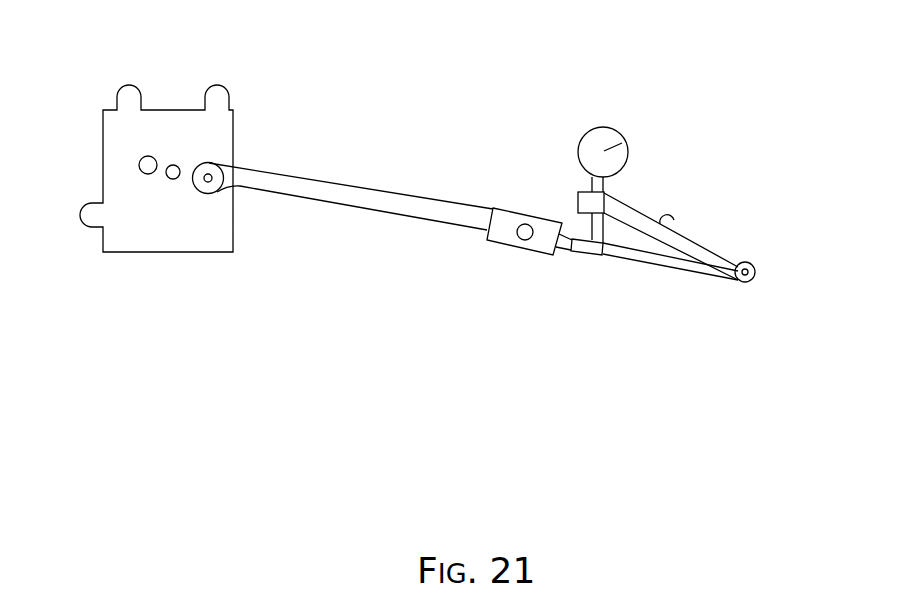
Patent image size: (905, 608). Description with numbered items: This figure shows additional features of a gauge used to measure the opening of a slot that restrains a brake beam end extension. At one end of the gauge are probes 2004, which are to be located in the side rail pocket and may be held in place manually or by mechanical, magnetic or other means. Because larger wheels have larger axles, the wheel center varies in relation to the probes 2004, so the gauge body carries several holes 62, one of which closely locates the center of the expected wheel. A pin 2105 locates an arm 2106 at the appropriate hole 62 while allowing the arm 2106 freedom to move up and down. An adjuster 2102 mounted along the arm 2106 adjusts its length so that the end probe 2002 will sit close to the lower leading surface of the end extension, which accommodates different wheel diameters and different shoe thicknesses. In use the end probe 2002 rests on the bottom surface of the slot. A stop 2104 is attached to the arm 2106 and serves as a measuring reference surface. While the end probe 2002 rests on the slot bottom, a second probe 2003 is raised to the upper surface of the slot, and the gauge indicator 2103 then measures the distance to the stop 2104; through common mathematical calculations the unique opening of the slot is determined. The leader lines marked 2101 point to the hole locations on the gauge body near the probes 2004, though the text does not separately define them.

The probes 2004 is at (130, 84).
The aperture 2101 is at (155, 158).
The holes 62 is at (208, 182).
The pin 2105 is at (213, 182).
The arm 2106 is at (377, 213).
The adjuster 2102 is at (525, 224).
The gauge indicator 2103 is at (603, 127).
The probe 2003 is at (667, 214).
The stop 2104 is at (583, 253).
The end probe 2002 is at (742, 283).